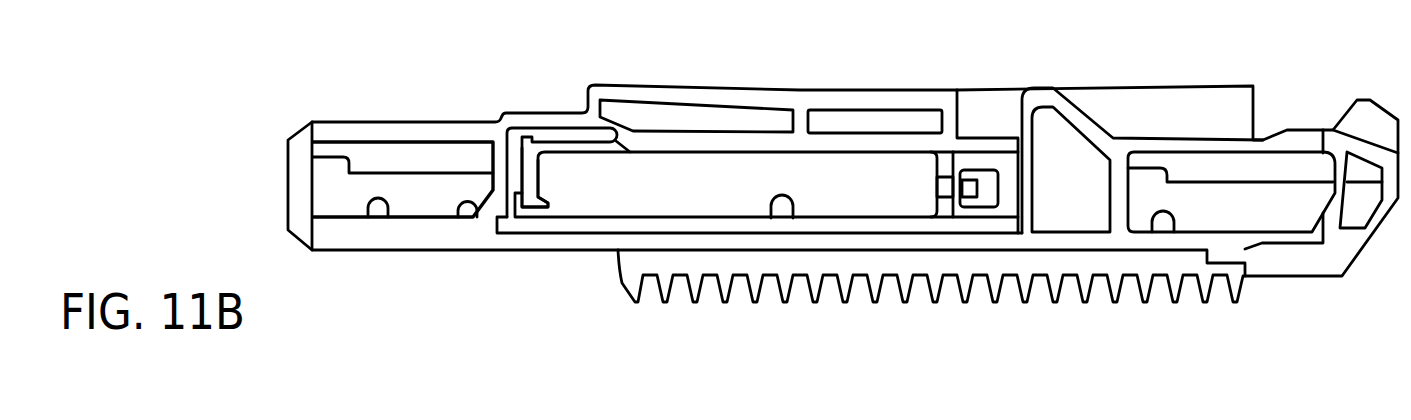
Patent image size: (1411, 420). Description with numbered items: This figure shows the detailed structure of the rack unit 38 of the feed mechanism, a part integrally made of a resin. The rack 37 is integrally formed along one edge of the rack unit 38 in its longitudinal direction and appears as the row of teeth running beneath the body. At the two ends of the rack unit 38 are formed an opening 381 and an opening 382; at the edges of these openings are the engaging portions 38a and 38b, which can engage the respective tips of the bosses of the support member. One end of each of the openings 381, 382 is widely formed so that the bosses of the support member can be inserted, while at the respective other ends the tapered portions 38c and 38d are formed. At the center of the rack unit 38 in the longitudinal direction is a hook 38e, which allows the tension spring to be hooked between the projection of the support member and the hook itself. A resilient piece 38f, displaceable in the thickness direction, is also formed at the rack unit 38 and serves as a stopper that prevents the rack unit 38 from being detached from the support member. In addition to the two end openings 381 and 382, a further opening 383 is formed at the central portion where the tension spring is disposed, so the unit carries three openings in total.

The rack 37 is at (1081, 292).
The rack unit 38 is at (722, 88).
The engaging portion 38a is at (393, 157).
The engaging portion 38b is at (1188, 165).
The tapered portion 38c is at (462, 204).
The tapered portion 38d is at (1305, 217).
The hook 38e is at (967, 187).
The resilient piece 38f is at (537, 208).
The opening 381 is at (388, 203).
The opening 382 is at (1173, 214).
The opening 383 is at (791, 206).